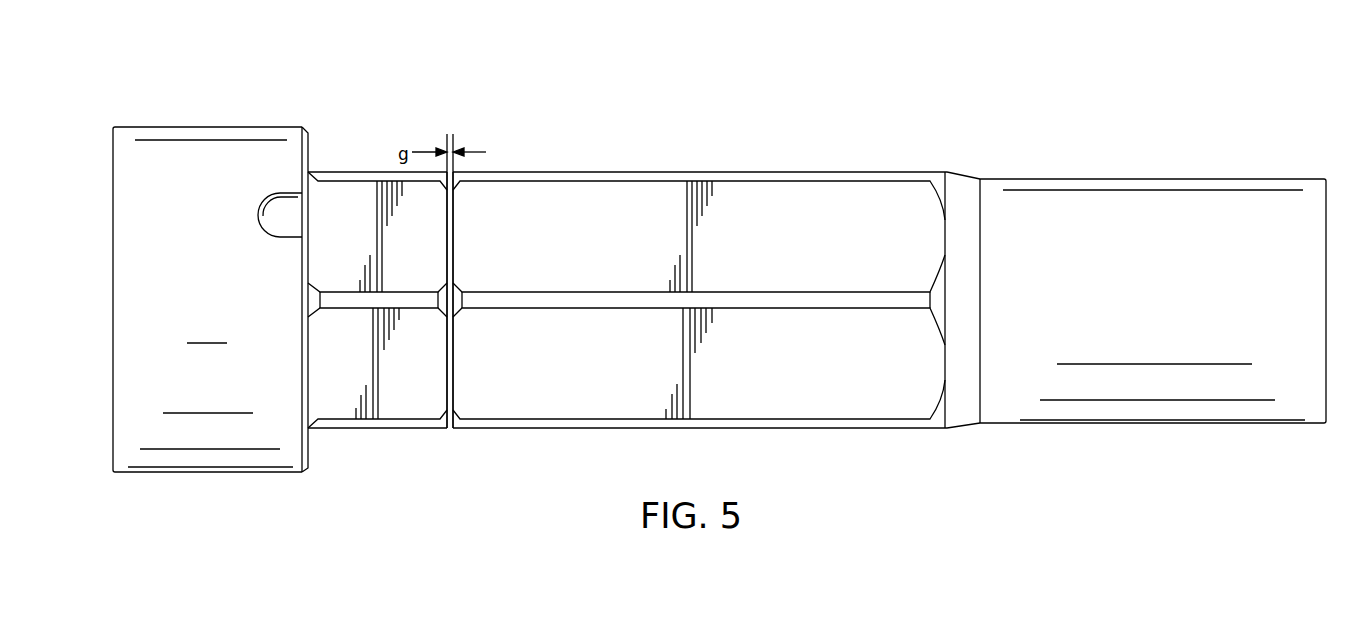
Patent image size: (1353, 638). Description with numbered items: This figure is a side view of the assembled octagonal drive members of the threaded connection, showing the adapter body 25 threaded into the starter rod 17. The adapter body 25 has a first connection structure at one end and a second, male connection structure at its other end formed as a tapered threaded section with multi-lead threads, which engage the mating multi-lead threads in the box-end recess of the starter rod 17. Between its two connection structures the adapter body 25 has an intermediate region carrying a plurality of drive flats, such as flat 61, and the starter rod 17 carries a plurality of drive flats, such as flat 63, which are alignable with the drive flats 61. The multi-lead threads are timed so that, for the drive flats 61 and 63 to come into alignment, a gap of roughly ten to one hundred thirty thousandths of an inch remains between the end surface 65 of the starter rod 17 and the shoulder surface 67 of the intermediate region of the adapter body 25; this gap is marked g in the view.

The adapter body 25 is at (201, 114).
The starter rod 17 is at (1160, 160).
The drive flat 61 is at (342, 408).
The drive flat 63 is at (530, 410).
The end surface 65 is at (443, 402).
The shoulder surface 67 is at (452, 240).